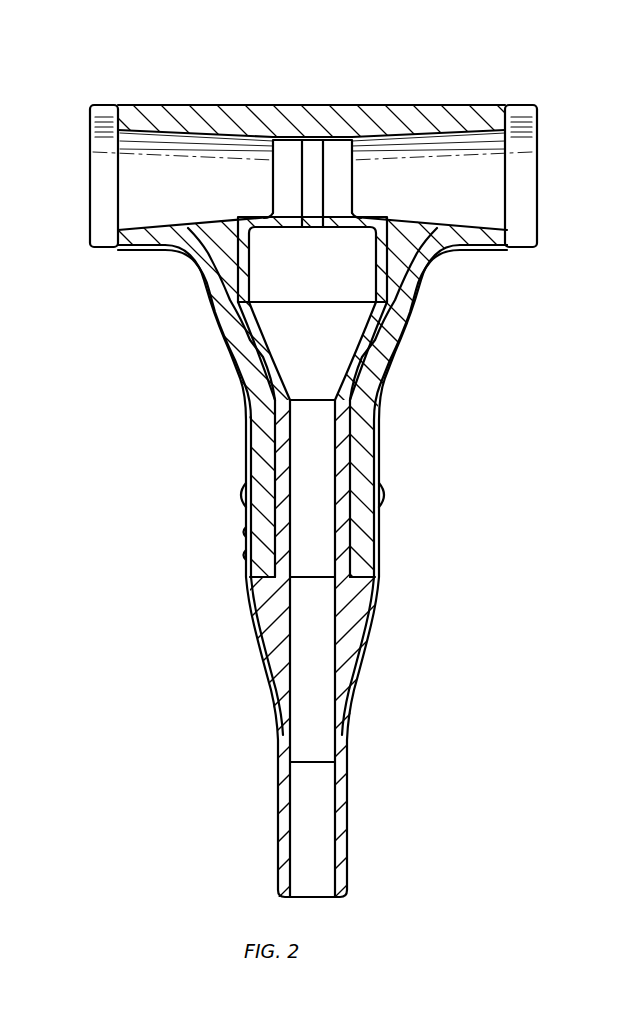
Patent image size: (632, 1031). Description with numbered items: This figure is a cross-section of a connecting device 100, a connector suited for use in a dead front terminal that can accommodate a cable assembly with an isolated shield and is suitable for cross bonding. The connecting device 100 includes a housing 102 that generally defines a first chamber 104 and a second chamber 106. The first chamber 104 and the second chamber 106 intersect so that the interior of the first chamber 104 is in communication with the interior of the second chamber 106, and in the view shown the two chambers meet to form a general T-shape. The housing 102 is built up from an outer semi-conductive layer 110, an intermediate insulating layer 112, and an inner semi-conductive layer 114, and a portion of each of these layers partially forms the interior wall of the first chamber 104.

The connecting device 100 is at (487, 60).
The housing 102 is at (400, 113).
The first chamber 104 is at (283, 330).
The second chamber 106 is at (135, 181).
The outer semi-conductive layer 110 is at (350, 706).
The intermediate insulating layer 112 is at (365, 541).
The inner semi-conductive layer 114 is at (340, 441).